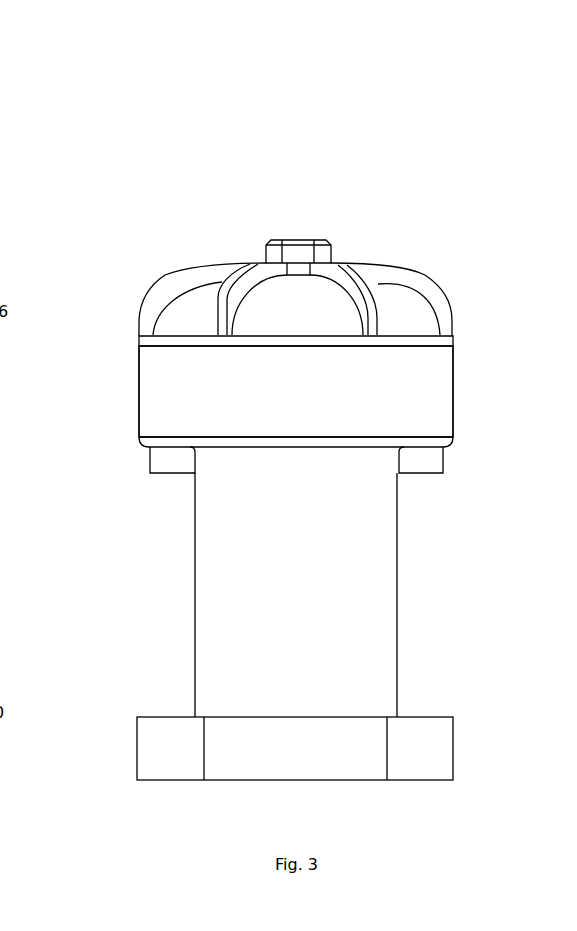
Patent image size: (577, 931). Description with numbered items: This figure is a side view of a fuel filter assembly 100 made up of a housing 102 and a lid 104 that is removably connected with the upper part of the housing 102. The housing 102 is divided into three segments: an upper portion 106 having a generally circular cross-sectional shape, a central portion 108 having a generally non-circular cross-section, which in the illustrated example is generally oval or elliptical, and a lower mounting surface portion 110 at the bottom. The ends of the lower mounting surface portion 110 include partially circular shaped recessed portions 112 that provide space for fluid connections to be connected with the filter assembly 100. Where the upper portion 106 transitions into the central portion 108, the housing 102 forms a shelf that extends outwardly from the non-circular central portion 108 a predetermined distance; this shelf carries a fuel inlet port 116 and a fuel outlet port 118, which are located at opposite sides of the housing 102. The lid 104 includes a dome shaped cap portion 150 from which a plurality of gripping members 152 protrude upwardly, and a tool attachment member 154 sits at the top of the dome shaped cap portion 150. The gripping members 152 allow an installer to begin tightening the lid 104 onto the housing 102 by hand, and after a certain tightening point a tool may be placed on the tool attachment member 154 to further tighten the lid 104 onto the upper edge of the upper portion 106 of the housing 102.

The fuel filter assembly 100 is at (303, 118).
The housing 102 is at (105, 378).
The lid 104 is at (339, 238).
The upper portion 106 is at (403, 392).
The central portion 108 is at (398, 583).
The lower mounting surface portion 110 is at (427, 750).
The recessed portions 112 is at (245, 742).
The fuel inlet port 116 is at (427, 466).
The fuel outlet port 118 is at (177, 462).
The dome shaped cap portion 150 is at (316, 298).
The gripping members 152 is at (447, 283).
The tool attachment member 154 is at (302, 236).